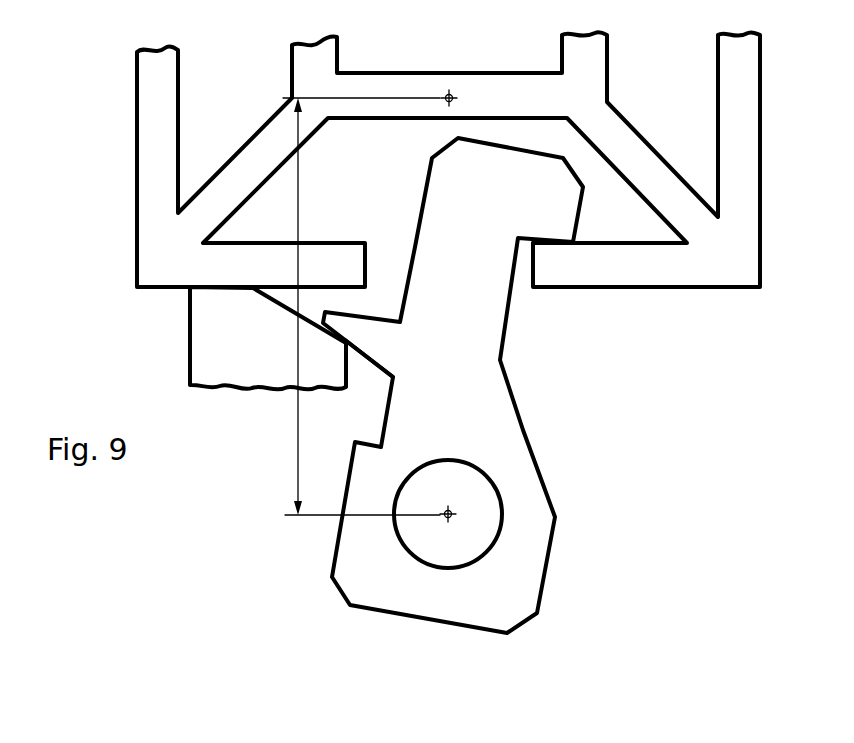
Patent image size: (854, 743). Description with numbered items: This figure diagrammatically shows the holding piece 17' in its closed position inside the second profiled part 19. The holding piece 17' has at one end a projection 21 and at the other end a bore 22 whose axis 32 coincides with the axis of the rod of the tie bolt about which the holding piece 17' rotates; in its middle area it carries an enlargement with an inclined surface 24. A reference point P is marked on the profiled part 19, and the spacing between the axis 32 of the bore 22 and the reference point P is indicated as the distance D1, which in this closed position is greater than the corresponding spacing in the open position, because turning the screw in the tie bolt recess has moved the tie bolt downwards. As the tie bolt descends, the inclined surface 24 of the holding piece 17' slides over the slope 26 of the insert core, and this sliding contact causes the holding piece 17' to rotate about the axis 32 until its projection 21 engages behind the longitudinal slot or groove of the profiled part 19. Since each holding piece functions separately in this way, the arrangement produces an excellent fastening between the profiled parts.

The second profiled part 19 is at (162, 245).
The slope 26 is at (287, 308).
The holding piece 17' is at (457, 385).
The inclined surface 24 is at (365, 356).
The projection 21 is at (560, 228).
The bore 22 is at (502, 493).
The axis 32 is at (455, 517).
The reference point P is at (452, 93).
The distance D1 is at (361, 306).